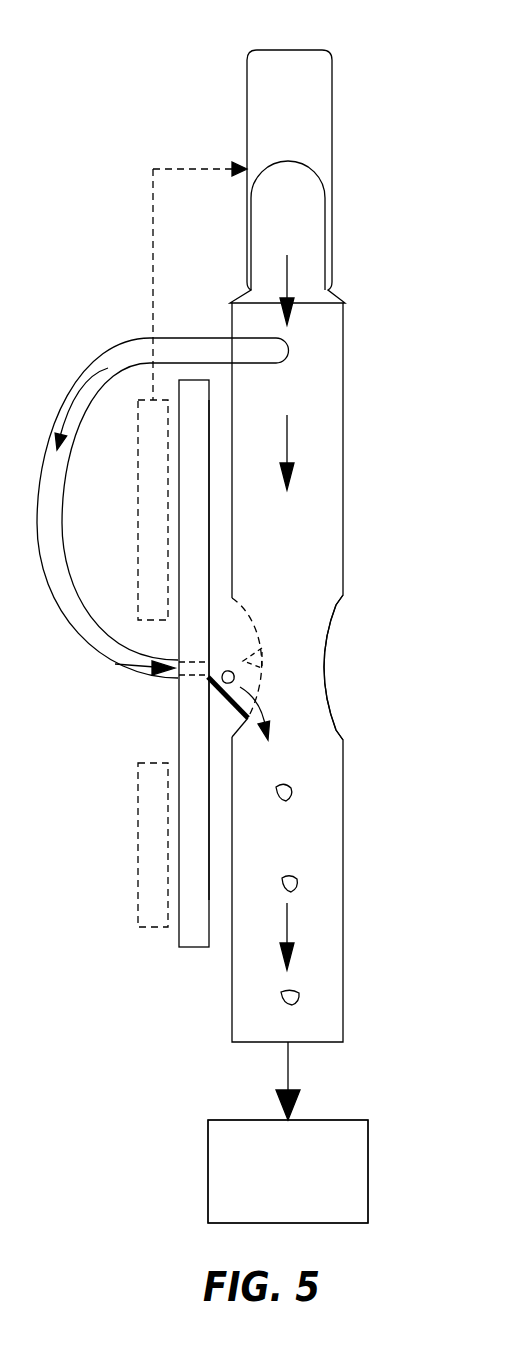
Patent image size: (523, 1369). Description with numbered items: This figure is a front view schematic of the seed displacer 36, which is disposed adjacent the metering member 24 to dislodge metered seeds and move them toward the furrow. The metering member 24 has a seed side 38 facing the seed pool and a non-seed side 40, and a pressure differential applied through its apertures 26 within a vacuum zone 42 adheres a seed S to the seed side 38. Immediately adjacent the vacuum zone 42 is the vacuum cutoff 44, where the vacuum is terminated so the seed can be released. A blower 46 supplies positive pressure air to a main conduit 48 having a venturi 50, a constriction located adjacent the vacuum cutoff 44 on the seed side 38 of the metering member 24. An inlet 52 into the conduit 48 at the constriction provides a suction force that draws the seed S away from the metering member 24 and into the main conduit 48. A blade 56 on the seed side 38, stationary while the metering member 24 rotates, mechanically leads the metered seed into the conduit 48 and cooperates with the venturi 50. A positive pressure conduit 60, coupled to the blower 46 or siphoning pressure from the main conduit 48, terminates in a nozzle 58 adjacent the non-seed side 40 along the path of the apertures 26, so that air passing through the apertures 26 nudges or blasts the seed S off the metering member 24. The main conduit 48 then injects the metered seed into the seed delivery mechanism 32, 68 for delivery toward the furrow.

The metering member 24 is at (195, 950).
The apertures 26 is at (193, 678).
The seed delivery mechanism 32 is at (333, 1118).
The seed displacer 36 is at (150, 130).
The seed side 38 is at (215, 534).
The non-seed side 40 is at (165, 888).
The vacuum zone 42 is at (137, 485).
The vacuum cutoff 44 is at (140, 635).
The blower 46 is at (282, 50).
The main conduit 48 is at (343, 370).
The venturi 50 is at (322, 628).
The inlet 52 is at (240, 669).
The blade 56 is at (230, 700).
The nozzle 58 is at (173, 676).
The positive pressure conduit 60 is at (112, 353).
The receptacle 68 is at (288, 1171).
The seed S is at (235, 681).